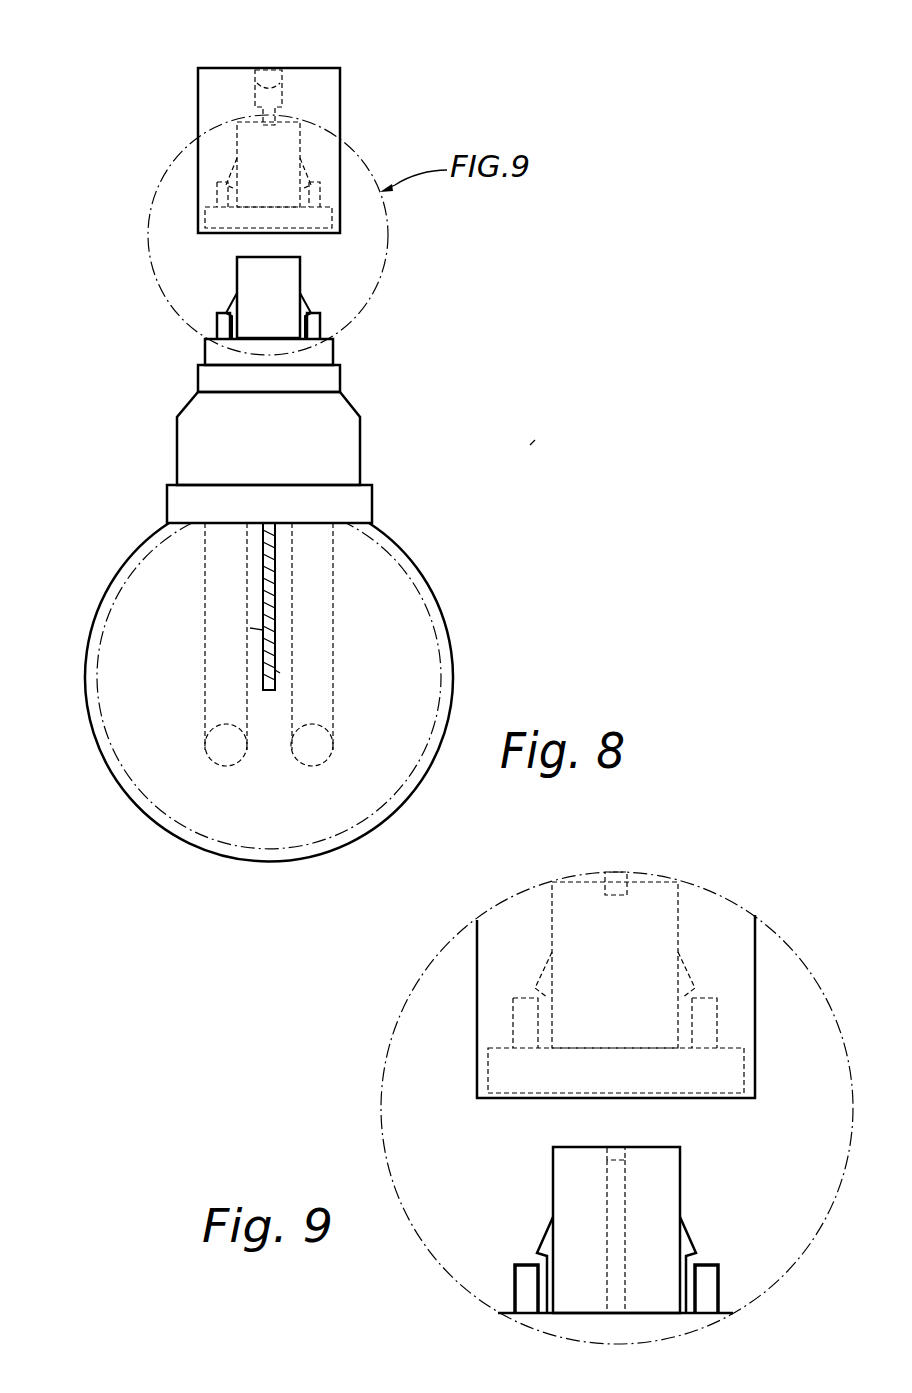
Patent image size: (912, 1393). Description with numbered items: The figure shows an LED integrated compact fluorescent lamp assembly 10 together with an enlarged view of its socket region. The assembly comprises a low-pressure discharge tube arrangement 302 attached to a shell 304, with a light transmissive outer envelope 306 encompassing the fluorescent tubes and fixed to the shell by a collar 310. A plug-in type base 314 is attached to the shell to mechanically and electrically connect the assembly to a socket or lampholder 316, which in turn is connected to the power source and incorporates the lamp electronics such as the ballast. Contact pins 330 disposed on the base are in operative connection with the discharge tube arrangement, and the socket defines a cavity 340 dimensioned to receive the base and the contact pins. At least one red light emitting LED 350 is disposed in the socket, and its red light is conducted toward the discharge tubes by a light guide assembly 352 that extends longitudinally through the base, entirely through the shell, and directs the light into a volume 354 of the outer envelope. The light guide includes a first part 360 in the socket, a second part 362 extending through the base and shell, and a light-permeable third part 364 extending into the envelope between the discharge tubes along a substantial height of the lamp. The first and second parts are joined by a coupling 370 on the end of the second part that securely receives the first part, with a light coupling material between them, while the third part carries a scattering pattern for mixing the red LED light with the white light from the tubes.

In FIG. 8, the lamp assembly 10 is at (530, 445).
In FIG. 8, the discharge tube arrangement 302 is at (205, 693).
In FIG. 8, the shell 304 is at (177, 437).
In FIG. 8, the outer envelope 306 is at (137, 541).
In FIG. 8, the collar 310 is at (375, 503).
In FIG. 8, the plug-in type base 314 is at (237, 280).
In FIG. 9, the plug-in type base 314 is at (530, 1204).
In FIG. 8, the socket or lampholder 316 is at (198, 112).
In FIG. 9, the socket or lampholder 316 is at (768, 990).
In FIG. 9, the contact pins 330 is at (523, 1287).
In FIG. 9, the cavity 340 is at (511, 1098).
In FIG. 8, the red light emitting LED 350 is at (282, 79).
In FIG. 8, the light guide assembly 352 is at (263, 630).
In FIG. 9, the light guide assembly 352 is at (622, 872).
In FIG. 8, the volume 354 is at (428, 690).
In FIG. 8, the first part 360 is at (298, 103).
In FIG. 8, the second part 362 is at (285, 430).
In FIG. 8, the third part 364 is at (280, 602).
In FIG. 8, the coupling 370 is at (275, 670).
In FIG. 9, the coupling 370 is at (625, 1157).